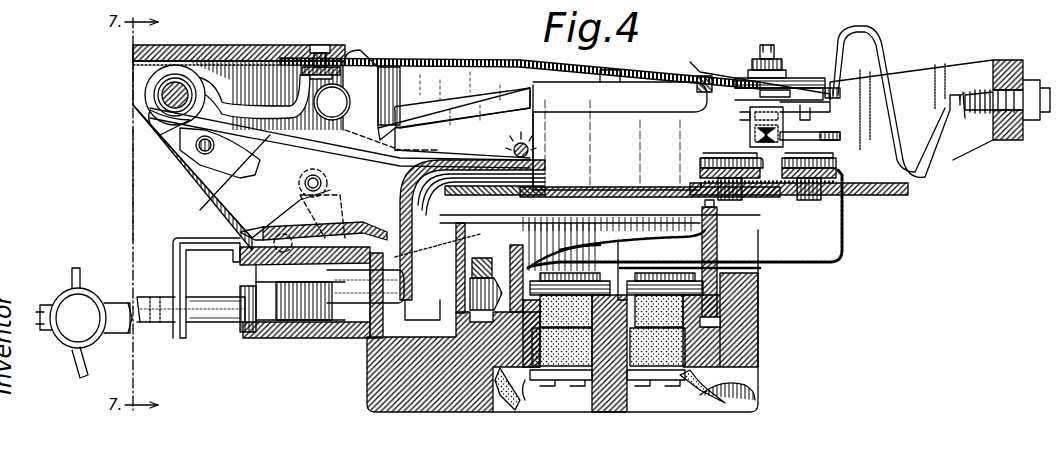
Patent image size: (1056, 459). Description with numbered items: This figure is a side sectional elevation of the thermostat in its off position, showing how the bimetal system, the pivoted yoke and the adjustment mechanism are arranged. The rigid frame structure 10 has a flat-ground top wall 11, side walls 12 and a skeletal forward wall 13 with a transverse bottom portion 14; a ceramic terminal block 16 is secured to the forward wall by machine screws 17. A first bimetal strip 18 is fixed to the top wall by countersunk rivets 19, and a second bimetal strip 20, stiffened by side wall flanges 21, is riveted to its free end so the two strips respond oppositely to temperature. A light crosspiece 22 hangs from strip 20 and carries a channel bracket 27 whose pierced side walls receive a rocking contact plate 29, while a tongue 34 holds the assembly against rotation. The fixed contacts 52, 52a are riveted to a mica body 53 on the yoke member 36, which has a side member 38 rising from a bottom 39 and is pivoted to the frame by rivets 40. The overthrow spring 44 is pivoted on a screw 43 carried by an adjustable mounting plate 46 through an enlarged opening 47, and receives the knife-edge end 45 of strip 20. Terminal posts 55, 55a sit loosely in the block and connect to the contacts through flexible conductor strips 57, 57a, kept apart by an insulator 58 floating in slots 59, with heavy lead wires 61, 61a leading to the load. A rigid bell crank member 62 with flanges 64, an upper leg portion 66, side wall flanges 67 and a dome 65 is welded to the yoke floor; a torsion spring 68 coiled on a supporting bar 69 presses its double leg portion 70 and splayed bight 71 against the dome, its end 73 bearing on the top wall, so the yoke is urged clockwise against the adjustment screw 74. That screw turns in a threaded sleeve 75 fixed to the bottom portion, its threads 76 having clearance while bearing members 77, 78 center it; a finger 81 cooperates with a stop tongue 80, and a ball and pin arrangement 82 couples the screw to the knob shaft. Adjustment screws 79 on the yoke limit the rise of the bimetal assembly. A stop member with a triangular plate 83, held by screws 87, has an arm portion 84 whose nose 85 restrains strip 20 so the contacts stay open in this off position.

The frame structure 10 is at (158, 155).
The top wall 11 is at (205, 45).
The side walls 12 is at (240, 70).
The forward wall 13 is at (388, 90).
The bottom portion 14 is at (385, 345).
The ceramic terminal block 16 is at (760, 348).
The machine screws 17 is at (485, 262).
The first bimetal strip 18 is at (465, 62).
The countersunk rivets 19 is at (320, 45).
The second bimetal strip 20 is at (672, 82).
The side wall flanges 21 is at (800, 80).
The crosspiece 22 is at (815, 106).
The channel bracket 27 is at (748, 125).
The contact plate 29 is at (838, 128).
The tongue 34 is at (730, 75).
The yoke member 36 is at (945, 80).
The yoke side member 38 is at (620, 138).
The yoke bottom 39 is at (650, 180).
The rivets 40 is at (338, 100).
The pivot screw 43 is at (968, 120).
The overthrow spring 44 is at (890, 70).
The knife-edge end 45 is at (835, 90).
The mounting plate 46 is at (1018, 62).
The enlarged opening 47 is at (1000, 110).
The fixed contact 52 is at (850, 197).
The fixed contact 52a is at (700, 170).
The mica body 53 is at (860, 175).
The terminal post 55 is at (668, 365).
The terminal post 55a is at (560, 365).
The flexible conductor strip 57 is at (830, 265).
The flexible conductor strip 57a is at (775, 210).
The insulator 58 is at (702, 215).
The slots 59 is at (760, 318).
The lead wire 61 is at (755, 380).
The lead wire 61a is at (500, 389).
The bell crank member 62 is at (436, 200).
The flanges 64 is at (395, 260).
The dome 65 is at (538, 148).
The upper leg portion 66 is at (540, 175).
The side wall flanges 67 is at (412, 108).
The torsion spring 68 is at (150, 110).
The supporting bar 69 is at (160, 95).
The double leg portion 70 is at (232, 138).
The bight 71 is at (521, 140).
The spring end 73 is at (278, 65).
The adjustment screw 74 is at (225, 325).
The threaded sleeve 75 is at (262, 340).
The threads 76 is at (332, 330).
The bearing member 77 is at (243, 335).
The bearing member 78 is at (355, 340).
The adjustment screws 79 is at (778, 60).
The tongue 80 is at (275, 230).
The finger 81 is at (208, 247).
The ball and pin arrangement 82 is at (80, 308).
The triangular plate 83 is at (200, 210).
The arm portion 84 is at (630, 100).
The nose 85 is at (705, 78).
The screws 87 is at (300, 183).